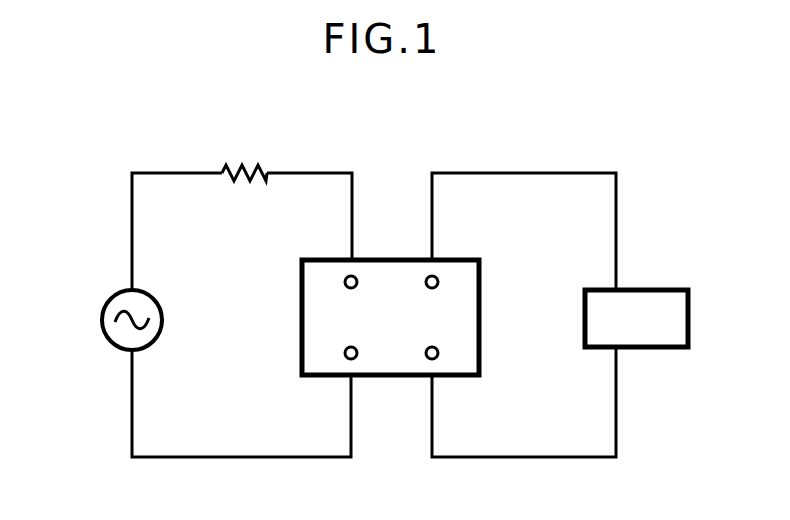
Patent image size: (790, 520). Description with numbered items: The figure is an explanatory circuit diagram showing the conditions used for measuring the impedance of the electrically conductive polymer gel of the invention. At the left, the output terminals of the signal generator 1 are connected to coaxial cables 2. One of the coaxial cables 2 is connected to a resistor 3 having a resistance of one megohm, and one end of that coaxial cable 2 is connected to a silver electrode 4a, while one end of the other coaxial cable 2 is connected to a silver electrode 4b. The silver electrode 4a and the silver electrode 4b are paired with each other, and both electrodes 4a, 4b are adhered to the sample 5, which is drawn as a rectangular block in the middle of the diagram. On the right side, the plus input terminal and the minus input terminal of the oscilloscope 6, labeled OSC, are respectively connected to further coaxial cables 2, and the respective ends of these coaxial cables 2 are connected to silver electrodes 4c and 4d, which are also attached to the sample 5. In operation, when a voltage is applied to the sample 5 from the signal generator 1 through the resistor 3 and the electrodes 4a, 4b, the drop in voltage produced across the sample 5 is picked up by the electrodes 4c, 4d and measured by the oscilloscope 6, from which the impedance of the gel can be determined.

The signal generator 1 is at (102, 318).
The coaxial cables 2 is at (130, 216).
The resistor 3 is at (240, 180).
The silver electrode 4a is at (345, 277).
The silver electrode 4b is at (345, 359).
The silver electrode 4c is at (438, 277).
The silver electrode 4d is at (438, 359).
The sample 5 is at (384, 276).
The oscilloscope 6 is at (690, 310).